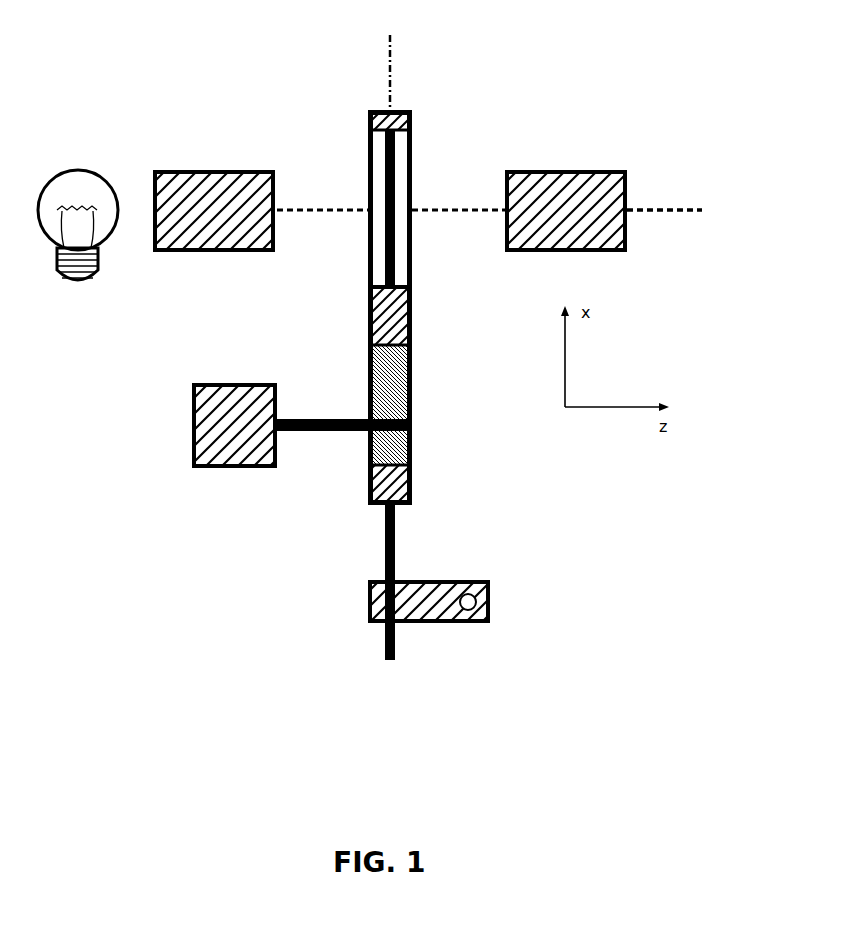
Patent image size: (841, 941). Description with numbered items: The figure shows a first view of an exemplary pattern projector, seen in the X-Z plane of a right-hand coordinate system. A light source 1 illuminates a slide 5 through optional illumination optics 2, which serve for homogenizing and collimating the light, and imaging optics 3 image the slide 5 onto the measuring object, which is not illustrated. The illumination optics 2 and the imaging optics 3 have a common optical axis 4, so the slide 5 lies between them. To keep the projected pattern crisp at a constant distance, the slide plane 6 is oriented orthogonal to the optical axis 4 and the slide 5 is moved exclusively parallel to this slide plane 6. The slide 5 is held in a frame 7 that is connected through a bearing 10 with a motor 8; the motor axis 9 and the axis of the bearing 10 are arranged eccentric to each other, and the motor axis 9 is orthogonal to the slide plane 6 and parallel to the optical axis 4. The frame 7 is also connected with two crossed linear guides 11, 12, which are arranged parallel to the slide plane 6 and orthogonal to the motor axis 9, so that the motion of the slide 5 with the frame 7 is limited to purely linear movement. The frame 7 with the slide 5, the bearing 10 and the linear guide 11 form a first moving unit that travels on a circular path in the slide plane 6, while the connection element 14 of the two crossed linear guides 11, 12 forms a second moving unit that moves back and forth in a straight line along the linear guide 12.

The light source 1 is at (72, 193).
The illumination optics 2 is at (205, 192).
The imaging optics 3 is at (545, 190).
The optical axis 4 is at (665, 210).
The slide 5 is at (395, 185).
The slide plane 6 is at (391, 72).
The frame 7 is at (383, 312).
The motor 8 is at (213, 425).
The motor axis 9 is at (330, 435).
The bearing 10 is at (412, 383).
The linear guide 11 is at (383, 543).
The linear guide 12 is at (480, 623).
The connection element 14 is at (430, 600).